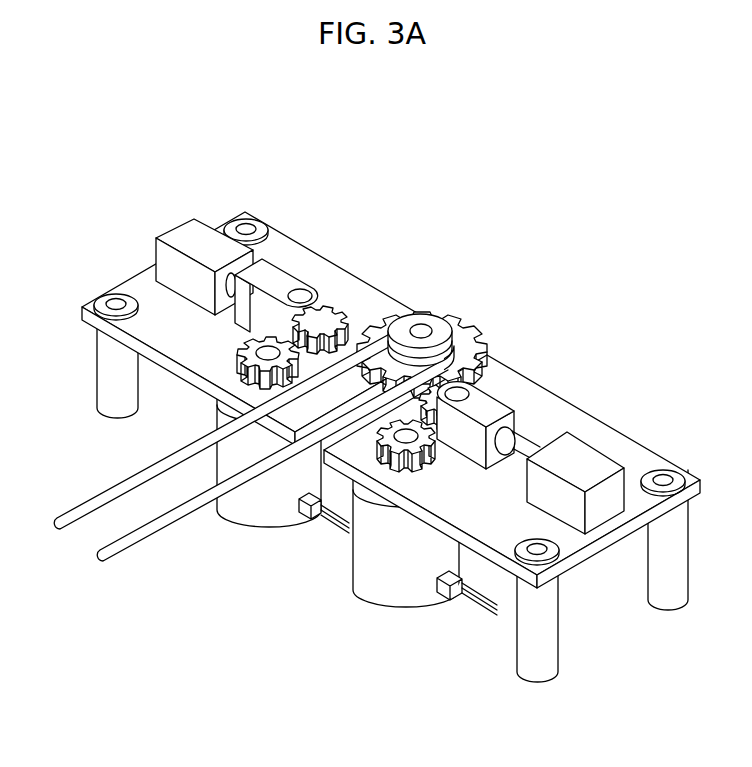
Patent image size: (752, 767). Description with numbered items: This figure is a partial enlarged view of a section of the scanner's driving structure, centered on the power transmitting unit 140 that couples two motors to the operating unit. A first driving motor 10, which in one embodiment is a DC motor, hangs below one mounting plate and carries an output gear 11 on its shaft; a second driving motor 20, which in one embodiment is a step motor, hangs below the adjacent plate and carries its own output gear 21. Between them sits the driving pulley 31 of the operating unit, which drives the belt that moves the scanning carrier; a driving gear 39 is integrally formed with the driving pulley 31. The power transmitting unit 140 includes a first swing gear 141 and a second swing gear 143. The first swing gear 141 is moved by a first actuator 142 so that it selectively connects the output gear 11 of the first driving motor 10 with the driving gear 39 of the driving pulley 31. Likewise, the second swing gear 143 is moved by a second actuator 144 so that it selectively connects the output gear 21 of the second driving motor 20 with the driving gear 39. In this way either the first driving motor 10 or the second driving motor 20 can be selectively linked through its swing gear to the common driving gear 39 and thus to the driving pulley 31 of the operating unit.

The first driving motor 10 is at (236, 512).
The output gear 11 is at (242, 370).
The second driving motor 20 is at (379, 588).
The output gear 21 is at (383, 453).
The driving pulley 31 is at (403, 323).
The driving gear 39 is at (463, 330).
The power transmitting unit 140 is at (312, 192).
The first swing gear 141 is at (325, 300).
The first actuator 142 is at (196, 228).
The second swing gear 143 is at (497, 380).
The second actuator 144 is at (582, 457).